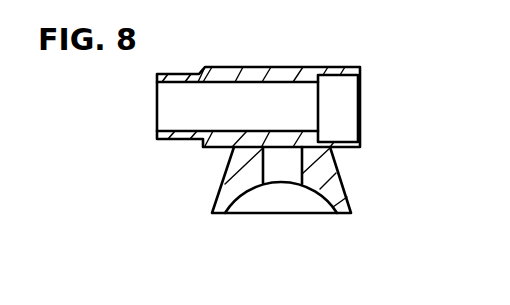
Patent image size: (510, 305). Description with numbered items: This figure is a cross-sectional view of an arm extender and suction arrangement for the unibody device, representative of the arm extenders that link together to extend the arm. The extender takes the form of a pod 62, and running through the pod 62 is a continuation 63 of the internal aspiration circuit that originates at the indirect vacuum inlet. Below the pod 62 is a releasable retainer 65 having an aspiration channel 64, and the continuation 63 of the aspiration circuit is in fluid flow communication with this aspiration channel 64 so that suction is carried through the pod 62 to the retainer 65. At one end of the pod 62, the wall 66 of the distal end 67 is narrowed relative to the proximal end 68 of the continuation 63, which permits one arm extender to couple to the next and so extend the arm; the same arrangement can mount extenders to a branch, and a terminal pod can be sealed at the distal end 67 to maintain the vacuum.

The pod 62 is at (270, 64).
The continuation of the internal aspiration circuit 63 is at (228, 90).
The aspiration channel 64 is at (283, 170).
The releasable retainer 65 is at (348, 204).
The wall 66 is at (158, 77).
The distal end 67 is at (171, 141).
The proximal end 68 is at (352, 66).